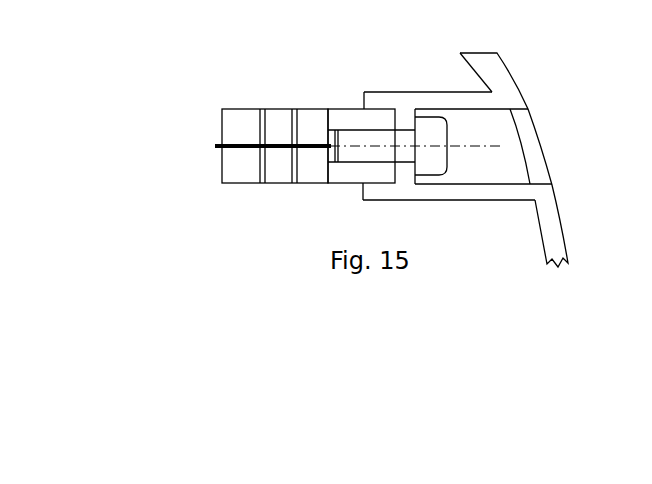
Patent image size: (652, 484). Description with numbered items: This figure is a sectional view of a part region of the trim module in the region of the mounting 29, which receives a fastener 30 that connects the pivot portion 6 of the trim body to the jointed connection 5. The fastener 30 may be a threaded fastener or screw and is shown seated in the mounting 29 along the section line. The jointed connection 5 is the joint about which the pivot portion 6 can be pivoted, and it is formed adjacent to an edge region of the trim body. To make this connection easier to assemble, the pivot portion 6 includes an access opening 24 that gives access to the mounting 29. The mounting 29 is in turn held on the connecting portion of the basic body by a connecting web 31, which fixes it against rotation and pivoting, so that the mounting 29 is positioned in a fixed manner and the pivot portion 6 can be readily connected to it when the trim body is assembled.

The jointed connection 5 is at (243, 122).
The pivot portion 6 is at (500, 73).
The access opening 24 is at (556, 143).
The mounting 29 is at (350, 120).
The fastener 30 is at (383, 133).
The connecting web 31 is at (242, 148).